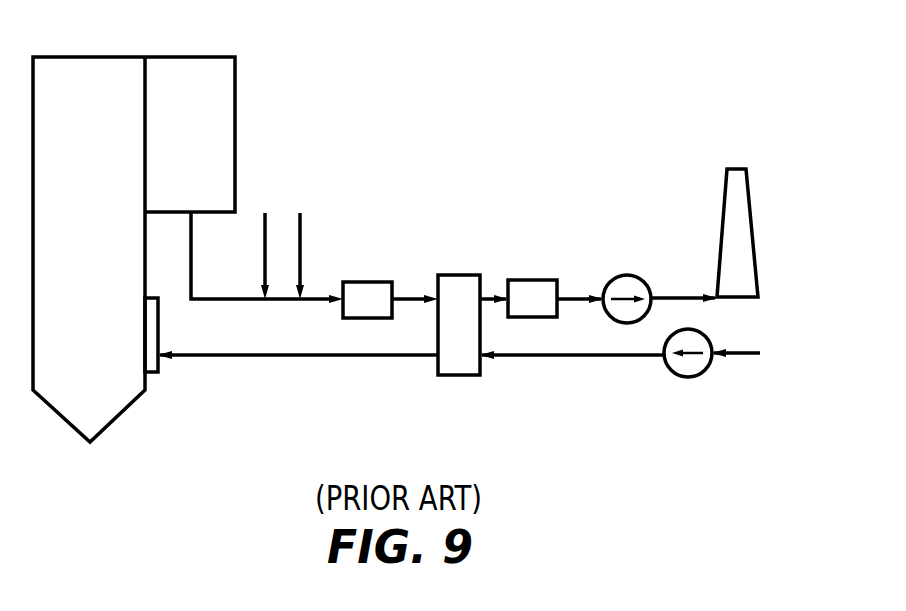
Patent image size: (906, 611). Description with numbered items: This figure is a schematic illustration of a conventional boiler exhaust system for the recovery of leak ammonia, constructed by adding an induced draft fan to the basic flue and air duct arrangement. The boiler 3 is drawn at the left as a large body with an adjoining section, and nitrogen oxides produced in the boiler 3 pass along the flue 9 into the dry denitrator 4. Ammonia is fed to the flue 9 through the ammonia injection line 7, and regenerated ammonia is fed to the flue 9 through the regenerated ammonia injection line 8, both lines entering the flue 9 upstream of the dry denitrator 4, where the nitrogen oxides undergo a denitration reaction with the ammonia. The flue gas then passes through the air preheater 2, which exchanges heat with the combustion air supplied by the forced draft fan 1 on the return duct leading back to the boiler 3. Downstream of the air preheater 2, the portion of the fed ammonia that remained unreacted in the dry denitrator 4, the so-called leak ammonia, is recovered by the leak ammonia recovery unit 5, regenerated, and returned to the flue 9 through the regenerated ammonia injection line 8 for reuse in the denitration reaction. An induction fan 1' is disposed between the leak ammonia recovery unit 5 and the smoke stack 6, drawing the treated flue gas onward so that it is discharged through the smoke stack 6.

The forced draft fan 1 is at (712, 366).
The induction fan 1' is at (639, 284).
The air preheater 2 is at (462, 275).
The boiler 3 is at (235, 112).
The dry denitrator 4 is at (368, 318).
The leak ammonia recovery unit 5 is at (545, 280).
The smoke stack 6 is at (750, 190).
The ammonia injection line 7 is at (302, 237).
The regenerated ammonia injection line 8 is at (267, 230).
The flue 9 is at (318, 300).